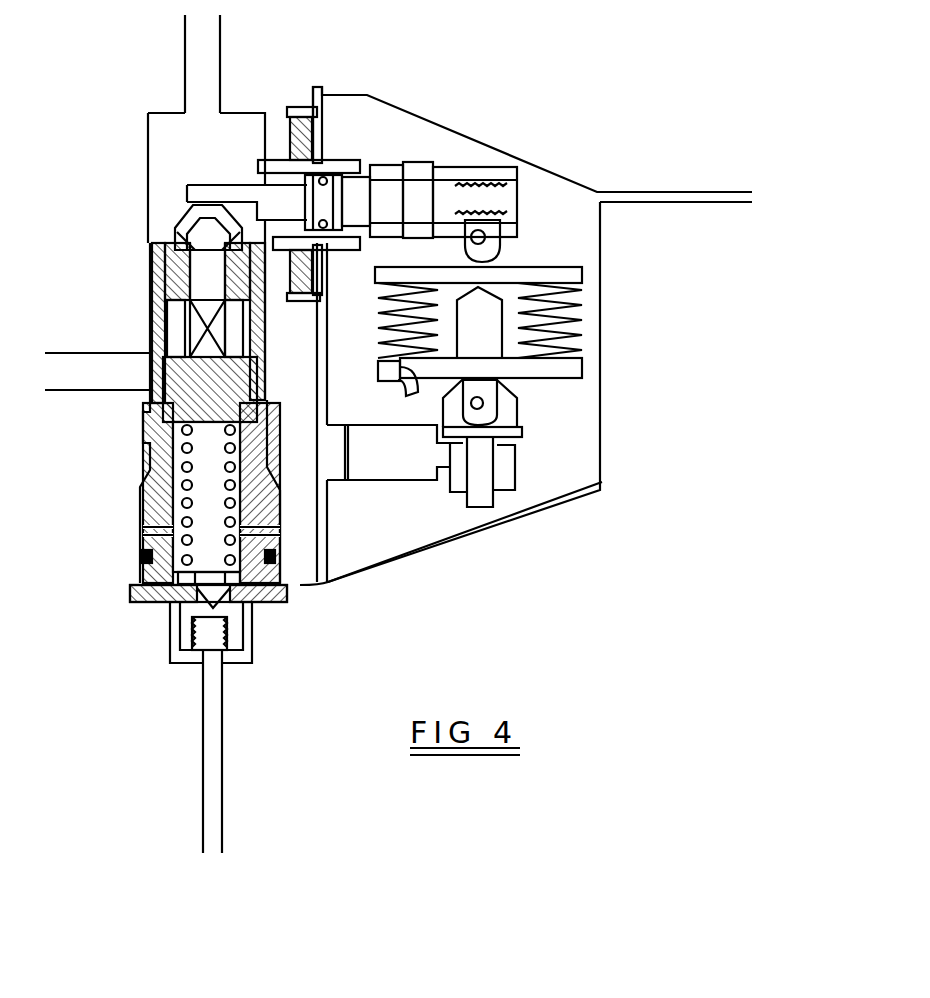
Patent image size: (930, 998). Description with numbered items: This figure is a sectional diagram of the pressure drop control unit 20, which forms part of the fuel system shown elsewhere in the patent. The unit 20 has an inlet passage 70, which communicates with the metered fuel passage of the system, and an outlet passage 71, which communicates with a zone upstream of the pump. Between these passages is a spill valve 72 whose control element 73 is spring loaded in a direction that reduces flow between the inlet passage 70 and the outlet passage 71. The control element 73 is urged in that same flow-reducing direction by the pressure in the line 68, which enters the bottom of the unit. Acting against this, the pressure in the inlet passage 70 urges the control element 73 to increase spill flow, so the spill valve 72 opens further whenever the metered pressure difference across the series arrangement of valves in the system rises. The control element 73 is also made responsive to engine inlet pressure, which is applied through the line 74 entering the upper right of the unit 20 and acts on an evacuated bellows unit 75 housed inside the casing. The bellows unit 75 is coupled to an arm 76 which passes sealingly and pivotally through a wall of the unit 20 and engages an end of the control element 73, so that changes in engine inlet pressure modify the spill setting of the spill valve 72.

The pressure drop control unit 20 is at (492, 561).
The line 68 is at (215, 787).
The inlet passage 70 is at (208, 43).
The outlet passage 71 is at (102, 365).
The spill valve 72 is at (115, 503).
The control element 73 is at (153, 260).
The line 74 is at (717, 195).
The evacuated bellows unit 75 is at (513, 293).
The arm 76 is at (237, 193).